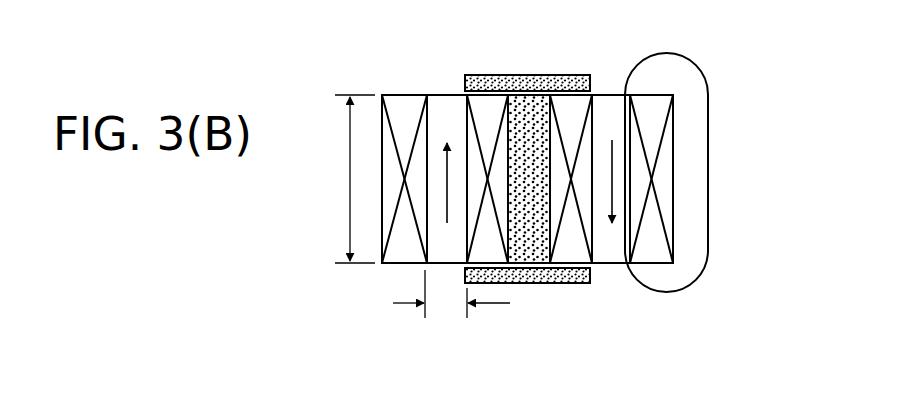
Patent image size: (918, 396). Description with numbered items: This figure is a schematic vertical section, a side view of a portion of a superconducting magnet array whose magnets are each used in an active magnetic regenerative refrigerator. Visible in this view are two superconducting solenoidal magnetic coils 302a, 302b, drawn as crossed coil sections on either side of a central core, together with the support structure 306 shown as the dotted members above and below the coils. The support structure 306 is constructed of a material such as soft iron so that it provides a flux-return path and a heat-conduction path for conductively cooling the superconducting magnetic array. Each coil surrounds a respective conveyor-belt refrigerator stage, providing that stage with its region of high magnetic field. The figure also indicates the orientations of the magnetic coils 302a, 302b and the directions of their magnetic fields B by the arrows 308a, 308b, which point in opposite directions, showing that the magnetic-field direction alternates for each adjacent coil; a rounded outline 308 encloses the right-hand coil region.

The superconducting solenoidal magnetic coil 302a is at (652, 113).
The superconducting solenoidal magnetic coil 302b is at (408, 110).
The support structure 306 is at (517, 73).
The current path 308 is at (692, 285).
The arrow 308a is at (447, 181).
The arrow 308b is at (615, 177).